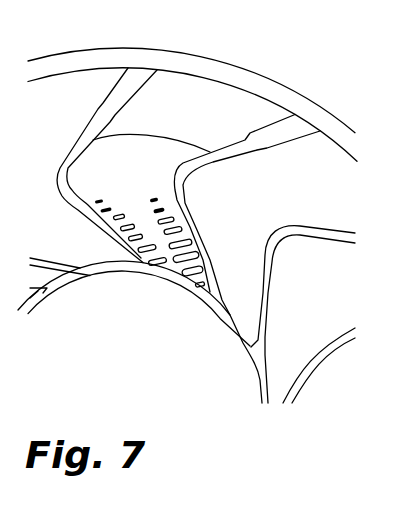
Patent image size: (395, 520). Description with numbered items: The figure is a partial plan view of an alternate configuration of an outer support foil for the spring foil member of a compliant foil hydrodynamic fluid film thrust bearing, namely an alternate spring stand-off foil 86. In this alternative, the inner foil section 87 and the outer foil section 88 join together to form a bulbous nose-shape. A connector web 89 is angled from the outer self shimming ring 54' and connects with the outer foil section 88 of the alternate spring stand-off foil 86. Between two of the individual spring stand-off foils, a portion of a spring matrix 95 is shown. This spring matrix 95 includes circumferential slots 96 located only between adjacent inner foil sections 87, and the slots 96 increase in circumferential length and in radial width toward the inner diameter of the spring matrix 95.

The outer self shimming ring 54' is at (192, 83).
The alternate spring stand-off foil 86 is at (191, 394).
The inner foil section 87 is at (195, 238).
The outer foil section 88 is at (212, 163).
The connector web 89 is at (285, 143).
The spring matrix 95 is at (161, 138).
The circumferential slots 96 is at (127, 217).